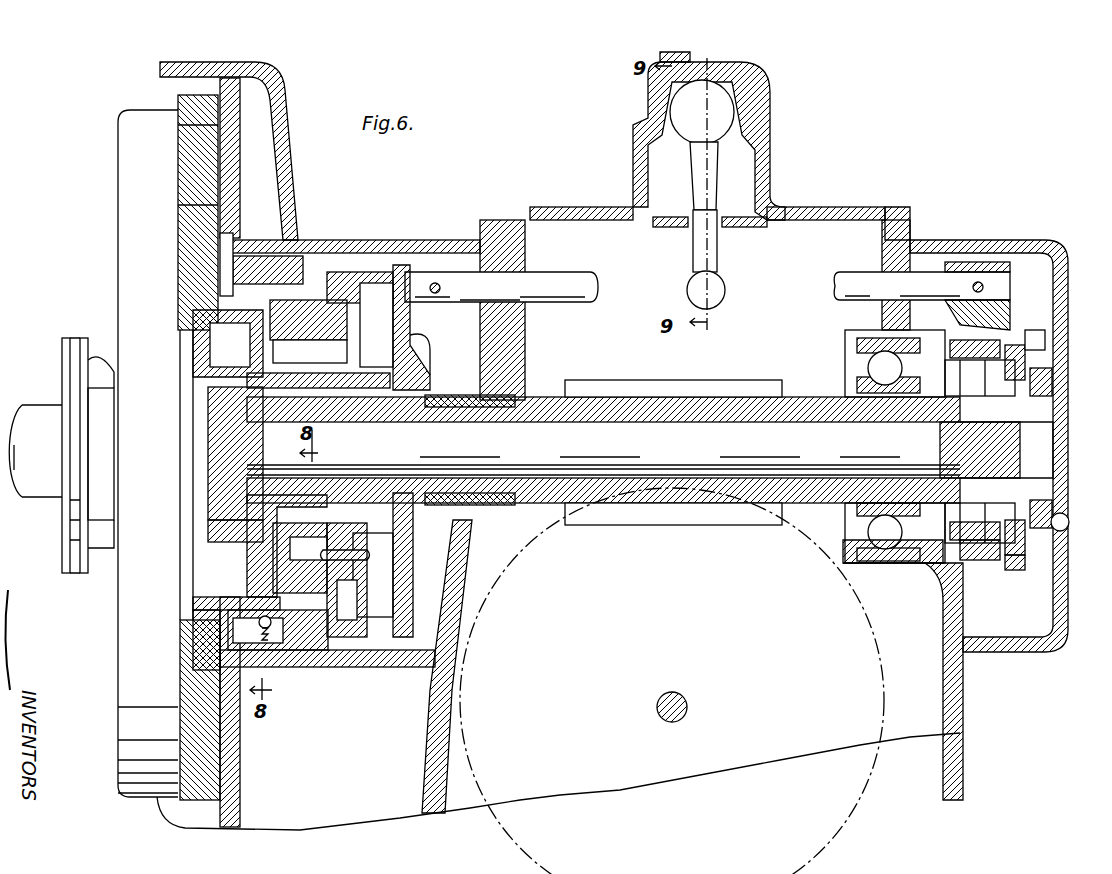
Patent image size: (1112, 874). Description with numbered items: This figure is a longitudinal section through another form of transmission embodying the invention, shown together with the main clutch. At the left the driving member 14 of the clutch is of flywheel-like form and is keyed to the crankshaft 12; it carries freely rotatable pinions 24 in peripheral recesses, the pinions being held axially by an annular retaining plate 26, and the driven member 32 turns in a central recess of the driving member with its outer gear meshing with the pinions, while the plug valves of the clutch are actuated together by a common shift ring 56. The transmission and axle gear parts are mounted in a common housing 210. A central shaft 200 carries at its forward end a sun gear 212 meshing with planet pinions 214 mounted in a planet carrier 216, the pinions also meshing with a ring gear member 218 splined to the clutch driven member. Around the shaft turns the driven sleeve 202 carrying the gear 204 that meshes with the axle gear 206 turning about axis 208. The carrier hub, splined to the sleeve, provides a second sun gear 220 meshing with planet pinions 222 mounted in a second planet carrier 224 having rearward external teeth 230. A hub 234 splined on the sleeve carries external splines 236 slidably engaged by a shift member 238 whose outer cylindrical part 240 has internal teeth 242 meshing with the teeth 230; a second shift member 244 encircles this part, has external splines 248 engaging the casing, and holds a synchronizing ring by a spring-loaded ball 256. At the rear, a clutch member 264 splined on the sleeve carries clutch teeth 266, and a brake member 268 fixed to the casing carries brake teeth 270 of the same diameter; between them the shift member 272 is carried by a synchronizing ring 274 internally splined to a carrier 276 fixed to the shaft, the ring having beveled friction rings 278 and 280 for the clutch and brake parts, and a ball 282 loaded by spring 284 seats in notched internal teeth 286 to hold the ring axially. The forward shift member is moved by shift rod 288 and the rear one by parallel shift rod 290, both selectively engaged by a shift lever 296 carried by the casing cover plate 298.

The crankshaft 12 is at (23, 414).
The driving member 14 is at (126, 155).
The pinion 24 is at (192, 140).
The retaining plate 26 is at (240, 790).
The driven member 32 is at (180, 228).
The shift ring 56 is at (73, 352).
The central shaft 200 is at (603, 427).
The driven sleeve 202 is at (546, 485).
The gear 204 is at (732, 382).
The axle gear 206 is at (488, 596).
The axis 208 is at (688, 705).
The housing 210 is at (420, 712).
The sun gear 212 is at (214, 487).
The planet pinions 214 is at (218, 570).
The planet carrier 216 is at (250, 506).
The ring gear member 218 is at (198, 314).
The sun gear 220 is at (322, 388).
The planet pinions 222 is at (308, 331).
The second planet carrier 224 is at (212, 602).
The external teeth 230 is at (356, 285).
The hub 234 is at (378, 405).
The external splines 236 is at (420, 372).
The shift member 238 is at (420, 352).
The outer cylindrical part 240 is at (375, 600).
The internal teeth 242 is at (338, 618).
The second shift member 244 is at (325, 268).
The external splines 248 is at (228, 260).
The ball 256 is at (268, 626).
The clutch member 264 is at (935, 400).
The clutch teeth 266 is at (930, 570).
The brake member 268 is at (1052, 368).
The brake teeth 270 is at (1030, 345).
The shift member 272 is at (978, 560).
The synchronizing ring 274 is at (983, 365).
The carrier 276 is at (1040, 393).
The friction ring 278 is at (962, 355).
The friction ring 280 is at (1030, 330).
The ball 282 is at (996, 560).
The spring 284 is at (1000, 518).
The internal teeth 286 is at (1022, 570).
The shift rod 288 is at (574, 278).
The shift rod 290 is at (852, 280).
The shift lever 296 is at (716, 200).
The casing cover plate 298 is at (770, 180).